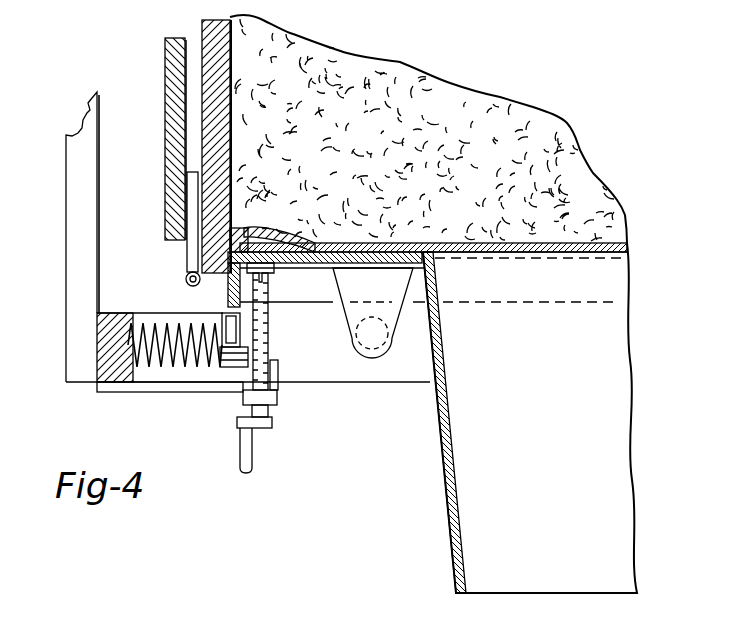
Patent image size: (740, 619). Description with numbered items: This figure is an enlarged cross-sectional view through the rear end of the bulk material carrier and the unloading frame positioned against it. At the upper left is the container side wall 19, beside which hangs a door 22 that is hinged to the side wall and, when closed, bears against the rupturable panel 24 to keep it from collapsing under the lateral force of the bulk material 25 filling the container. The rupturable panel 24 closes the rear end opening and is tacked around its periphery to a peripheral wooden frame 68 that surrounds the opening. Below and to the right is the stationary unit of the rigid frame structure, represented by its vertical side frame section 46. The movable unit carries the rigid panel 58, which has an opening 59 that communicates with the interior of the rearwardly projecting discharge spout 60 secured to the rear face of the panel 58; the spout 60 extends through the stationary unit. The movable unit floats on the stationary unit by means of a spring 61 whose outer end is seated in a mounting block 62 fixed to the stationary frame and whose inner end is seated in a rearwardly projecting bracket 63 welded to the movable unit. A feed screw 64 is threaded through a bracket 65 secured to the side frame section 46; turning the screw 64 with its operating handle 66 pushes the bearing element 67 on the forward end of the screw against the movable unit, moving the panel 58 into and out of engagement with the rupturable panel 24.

The side wall 19 is at (232, 110).
The door 22 is at (165, 168).
The rupturable panel 24 is at (503, 258).
The bulk material 25 is at (562, 126).
The side frame section 46 is at (68, 246).
The rigid panel 58 is at (385, 245).
The opening 59 is at (453, 258).
The discharge spout 60 is at (446, 523).
The spring 61 is at (187, 365).
The mounting block 62 is at (97, 340).
The bracket 63 is at (226, 368).
The feed screw 64 is at (269, 350).
The bracket 65 is at (120, 387).
The operating handle 66 is at (254, 454).
The bearing element 67 is at (272, 274).
The peripheral wooden frame 68 is at (280, 236).